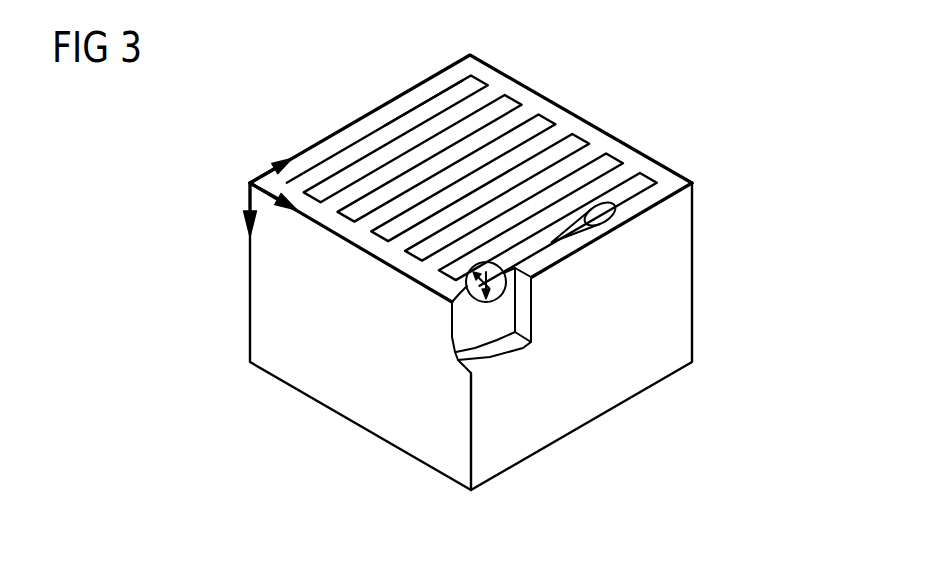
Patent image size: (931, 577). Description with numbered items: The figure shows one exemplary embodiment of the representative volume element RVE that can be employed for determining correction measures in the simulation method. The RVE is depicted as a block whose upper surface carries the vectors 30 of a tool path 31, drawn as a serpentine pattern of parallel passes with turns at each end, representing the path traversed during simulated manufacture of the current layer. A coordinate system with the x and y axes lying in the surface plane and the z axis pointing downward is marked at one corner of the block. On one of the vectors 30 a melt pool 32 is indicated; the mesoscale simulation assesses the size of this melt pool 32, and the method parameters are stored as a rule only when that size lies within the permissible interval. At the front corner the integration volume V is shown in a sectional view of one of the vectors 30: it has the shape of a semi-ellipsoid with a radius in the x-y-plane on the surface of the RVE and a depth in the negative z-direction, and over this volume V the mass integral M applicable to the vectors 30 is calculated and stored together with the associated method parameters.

The vectors 30 is at (383, 122).
The tool path 31 is at (446, 82).
The melt pool 32 is at (619, 220).
The representative volume element RVE is at (688, 277).
The integration volume V is at (466, 307).
The x-direction x is at (262, 172).
The y-direction y is at (243, 183).
The z-direction z is at (248, 202).